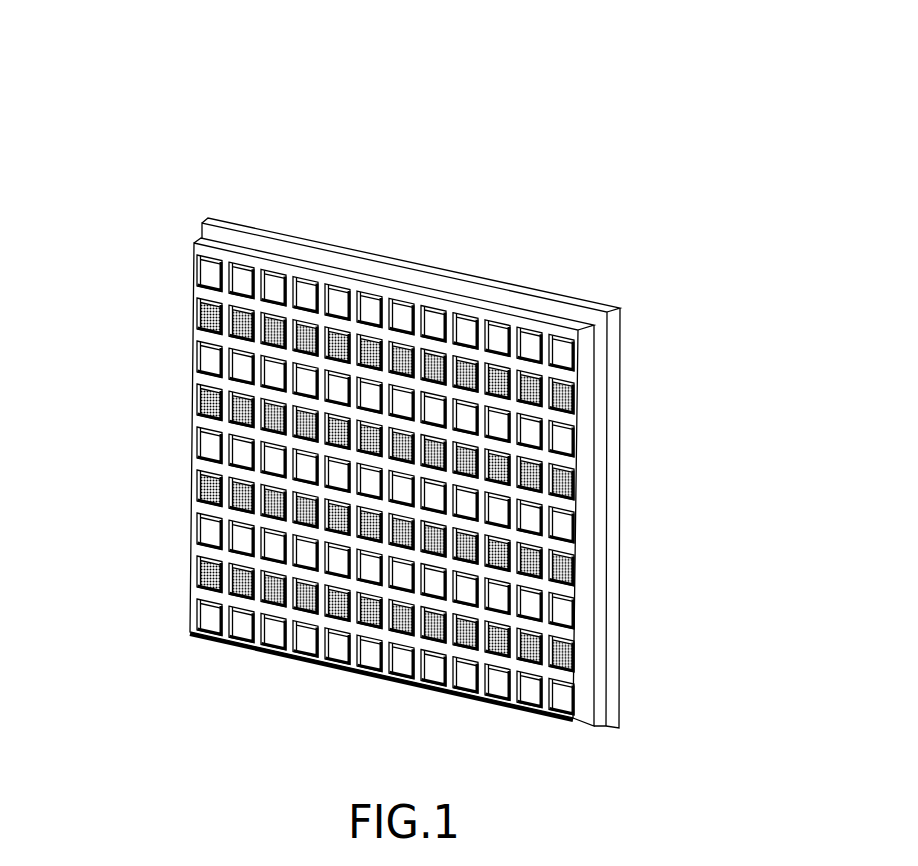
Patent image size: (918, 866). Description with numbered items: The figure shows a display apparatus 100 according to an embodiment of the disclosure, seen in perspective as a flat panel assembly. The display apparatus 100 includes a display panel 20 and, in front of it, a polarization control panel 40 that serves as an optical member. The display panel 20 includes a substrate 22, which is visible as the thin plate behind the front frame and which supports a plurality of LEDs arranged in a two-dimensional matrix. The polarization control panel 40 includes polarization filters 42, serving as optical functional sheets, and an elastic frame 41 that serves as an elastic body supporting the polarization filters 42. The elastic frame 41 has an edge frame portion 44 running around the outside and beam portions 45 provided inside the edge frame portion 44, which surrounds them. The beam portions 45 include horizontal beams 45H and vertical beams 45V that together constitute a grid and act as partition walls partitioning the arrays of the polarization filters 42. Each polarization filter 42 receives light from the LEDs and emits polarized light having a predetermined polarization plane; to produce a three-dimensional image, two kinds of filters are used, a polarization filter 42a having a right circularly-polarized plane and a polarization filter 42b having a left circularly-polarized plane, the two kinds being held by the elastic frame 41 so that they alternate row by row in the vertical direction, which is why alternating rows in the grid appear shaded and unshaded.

The display apparatus 100 is at (447, 104).
The display panel 20 is at (630, 500).
The substrate 22 is at (612, 336).
The polarization control panel 40 is at (592, 550).
The elastic frame 41 is at (588, 368).
The edge frame portion 44 is at (392, 282).
The polarization filters 42 is at (403, 488).
The polarization filter 42a is at (205, 444).
The polarization filter 42b is at (205, 399).
The beam portions 45 is at (470, 595).
The horizontal beams 45H is at (565, 458).
The vertical beams 45V is at (222, 617).